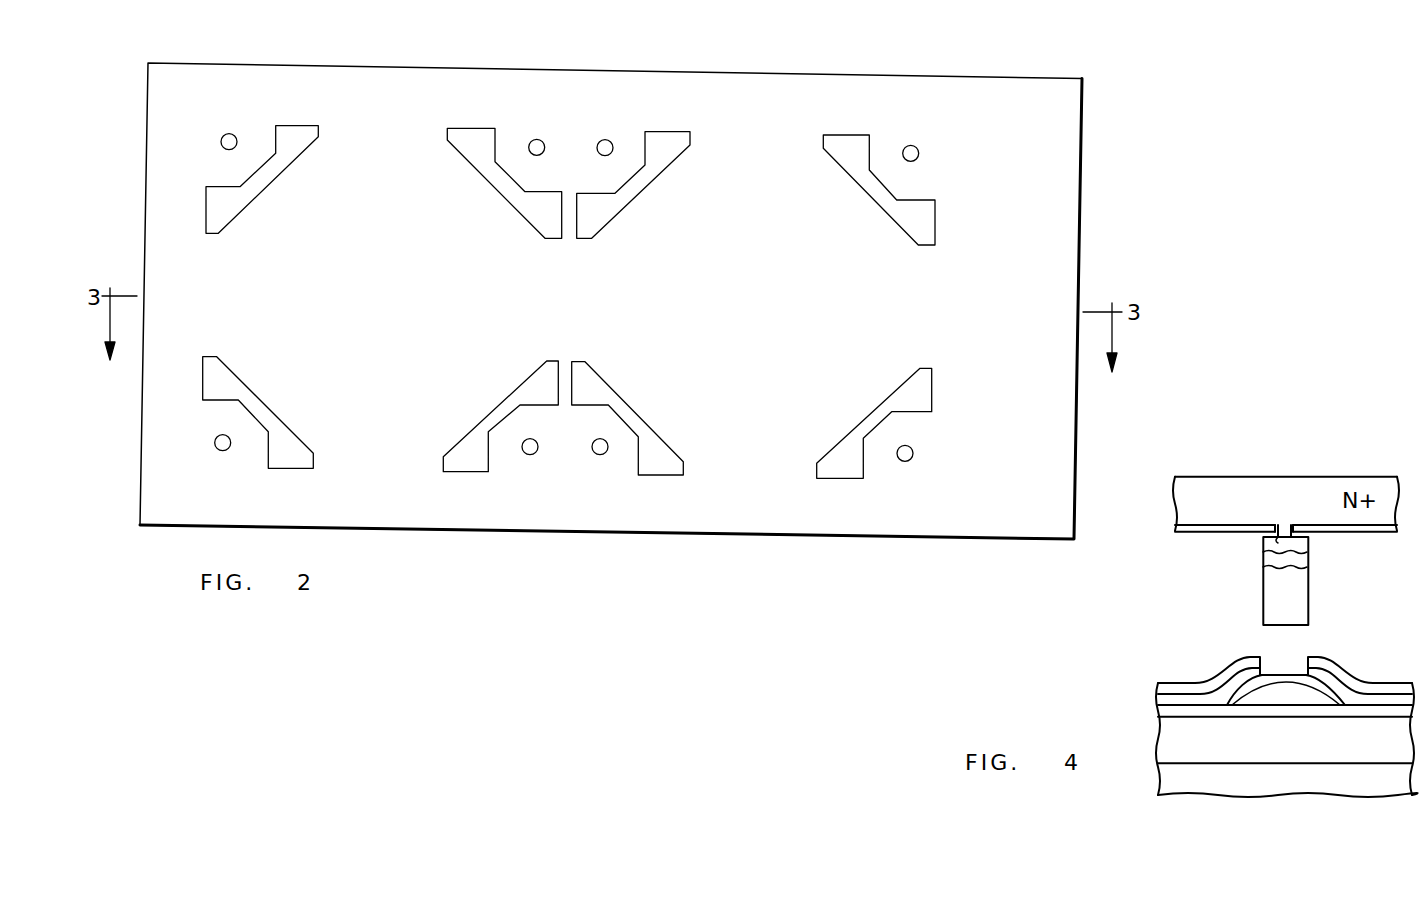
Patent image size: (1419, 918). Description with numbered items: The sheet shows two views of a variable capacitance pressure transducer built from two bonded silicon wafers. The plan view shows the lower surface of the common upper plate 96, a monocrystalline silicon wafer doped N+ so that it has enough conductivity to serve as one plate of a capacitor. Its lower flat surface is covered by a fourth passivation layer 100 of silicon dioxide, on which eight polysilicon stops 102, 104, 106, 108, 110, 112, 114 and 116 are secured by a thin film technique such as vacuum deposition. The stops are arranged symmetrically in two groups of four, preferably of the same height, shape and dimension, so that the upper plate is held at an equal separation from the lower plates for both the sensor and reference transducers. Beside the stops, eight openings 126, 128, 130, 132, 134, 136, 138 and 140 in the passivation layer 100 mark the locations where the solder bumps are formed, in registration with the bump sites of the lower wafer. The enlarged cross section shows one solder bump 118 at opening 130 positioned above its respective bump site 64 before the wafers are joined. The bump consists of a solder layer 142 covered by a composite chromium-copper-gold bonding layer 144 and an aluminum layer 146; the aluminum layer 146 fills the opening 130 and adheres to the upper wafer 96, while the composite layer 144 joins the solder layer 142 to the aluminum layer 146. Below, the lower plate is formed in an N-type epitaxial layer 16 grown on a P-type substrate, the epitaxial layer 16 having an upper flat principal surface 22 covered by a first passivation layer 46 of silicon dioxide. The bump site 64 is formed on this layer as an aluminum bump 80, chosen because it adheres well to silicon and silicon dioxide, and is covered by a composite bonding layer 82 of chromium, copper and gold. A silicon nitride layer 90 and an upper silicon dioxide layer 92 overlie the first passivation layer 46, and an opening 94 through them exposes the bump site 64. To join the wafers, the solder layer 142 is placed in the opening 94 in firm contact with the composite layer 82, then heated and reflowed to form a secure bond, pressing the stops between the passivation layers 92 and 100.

In FIG. 2, the upper plate 96 is at (435, 68).
In FIG. 4, the upper plate 96 is at (1307, 510).
In FIG. 2, the polysilicon stop 102 is at (258, 192).
In FIG. 2, the polysilicon stop 104 is at (500, 192).
In FIG. 2, the polysilicon stop 106 is at (248, 395).
In FIG. 2, the polysilicon stop 108 is at (510, 398).
In FIG. 2, the polysilicon stop 110 is at (637, 192).
In FIG. 2, the polysilicon stop 112 is at (877, 202).
In FIG. 2, the polysilicon stop 114 is at (623, 408).
In FIG. 2, the polysilicon stop 116 is at (872, 415).
In FIG. 2, the opening 126 is at (230, 133).
In FIG. 2, the opening 128 is at (538, 139).
In FIG. 2, the opening 130 is at (224, 451).
In FIG. 4, the opening 130 is at (1277, 541).
In FIG. 2, the opening 132 is at (525, 455).
In FIG. 2, the opening 134 is at (610, 140).
In FIG. 2, the opening 136 is at (915, 146).
In FIG. 2, the opening 138 is at (600, 455).
In FIG. 2, the opening 140 is at (905, 462).
In FIG. 4, the fourth passivation layer 100 is at (1187, 530).
In FIG. 4, the solder bump 118 is at (1264, 575).
In FIG. 4, the solder layer 142 is at (1302, 595).
In FIG. 4, the composite chromium-copper-gold bonding layer 144 is at (1302, 560).
In FIG. 4, the aluminum layer 146 is at (1298, 542).
In FIG. 4, the opening 94 is at (1262, 658).
In FIG. 4, the composite bonding layer 82 is at (1280, 672).
In FIG. 4, the solder bump site 64 is at (1249, 707).
In FIG. 4, the upper silicon dioxide layer 92 is at (1173, 687).
In FIG. 4, the silicon nitride layer 90 is at (1162, 700).
In FIG. 4, the first passivation layer 46 is at (1158, 708).
In FIG. 4, the aluminum bump 80 is at (1283, 697).
In FIG. 4, the N-type epitaxial layer 16 is at (1337, 749).
In FIG. 4, the upper flat principal surface 22 is at (1353, 718).